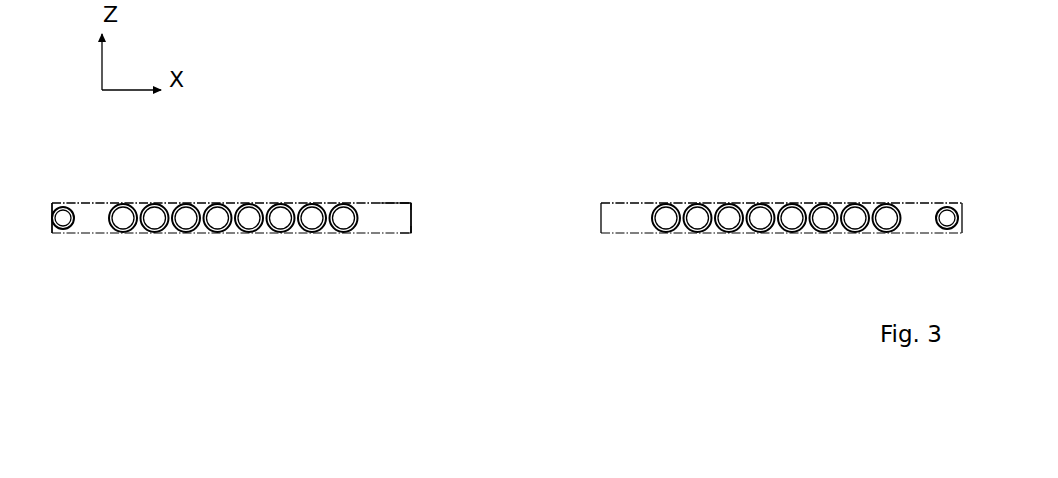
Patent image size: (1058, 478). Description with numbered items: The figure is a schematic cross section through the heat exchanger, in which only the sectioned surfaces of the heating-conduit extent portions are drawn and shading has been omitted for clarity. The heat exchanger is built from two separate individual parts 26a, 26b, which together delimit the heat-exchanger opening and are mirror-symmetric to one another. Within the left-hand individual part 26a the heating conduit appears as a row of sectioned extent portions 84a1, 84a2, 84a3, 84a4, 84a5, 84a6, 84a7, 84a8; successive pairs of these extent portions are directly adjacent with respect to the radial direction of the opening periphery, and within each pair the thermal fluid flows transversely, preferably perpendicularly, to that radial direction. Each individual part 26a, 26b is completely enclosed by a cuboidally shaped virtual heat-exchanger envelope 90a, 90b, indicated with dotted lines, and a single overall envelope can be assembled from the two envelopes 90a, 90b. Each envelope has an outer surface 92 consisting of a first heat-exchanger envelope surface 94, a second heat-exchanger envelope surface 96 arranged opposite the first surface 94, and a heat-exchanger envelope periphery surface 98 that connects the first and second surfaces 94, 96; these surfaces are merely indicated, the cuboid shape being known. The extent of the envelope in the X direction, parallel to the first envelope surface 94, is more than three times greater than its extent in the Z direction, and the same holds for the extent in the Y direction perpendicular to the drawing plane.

The individual part 26a is at (262, 194).
The individual part 26b is at (657, 192).
The extent portion 84a1 is at (344, 220).
The extent portion 84a2 is at (312, 220).
The extent portion 84a3 is at (280, 220).
The extent portion 84a4 is at (249, 220).
The extent portion 84a5 is at (218, 216).
The extent portion 84a6 is at (186, 216).
The extent portion 84a7 is at (154, 220).
The extent portion 84a8 is at (123, 220).
The virtual heat-exchanger envelope 90a is at (338, 201).
The virtual heat-exchanger envelope 90b is at (602, 203).
The outer surface 92 is at (397, 200).
The first heat-exchanger envelope surface 94 is at (406, 202).
The second heat-exchanger envelope surface 96 is at (406, 235).
The heat-exchanger envelope periphery surface 98 is at (412, 214).